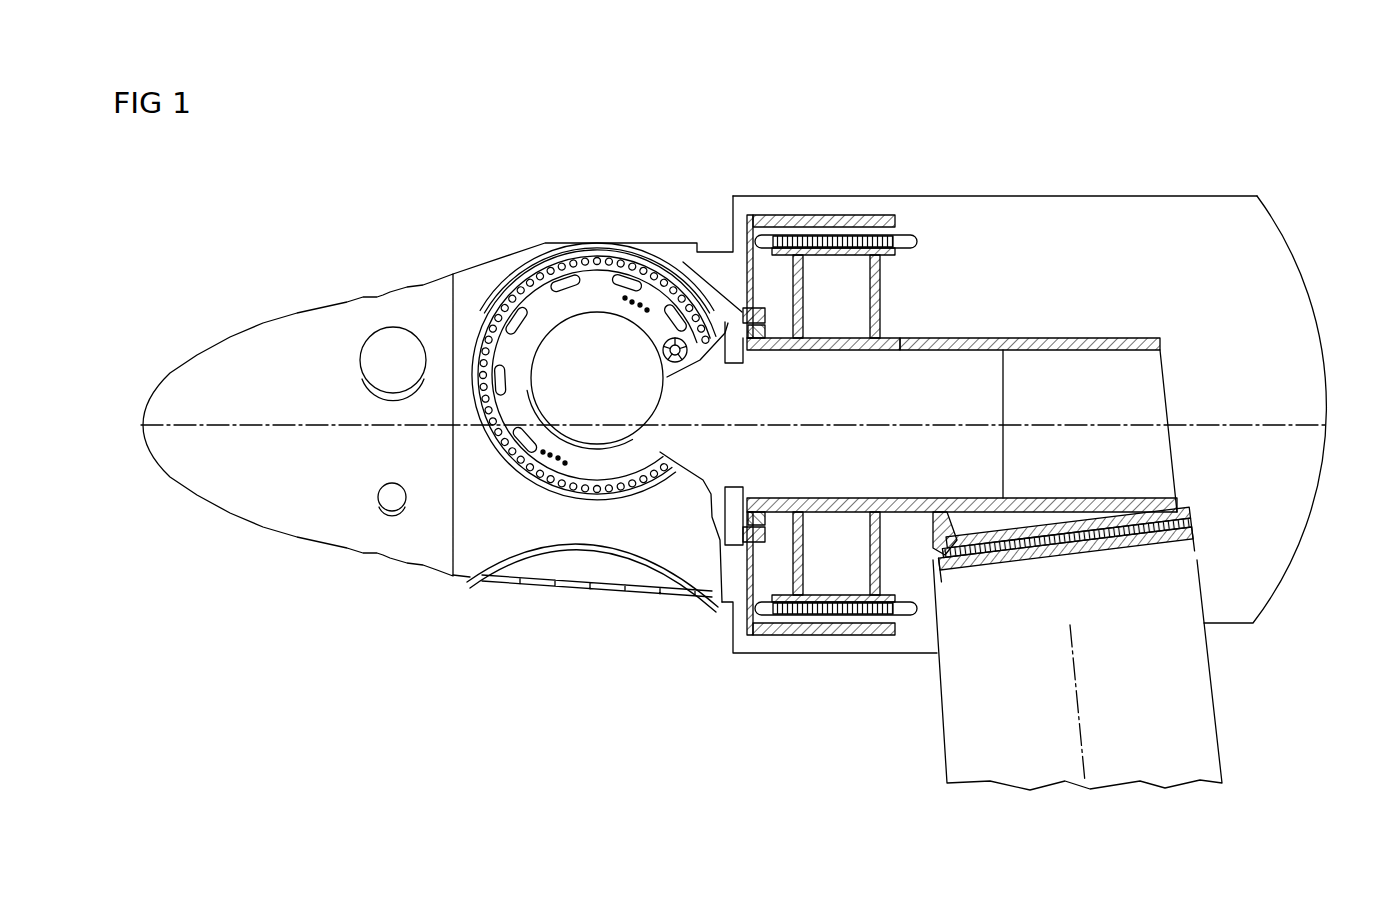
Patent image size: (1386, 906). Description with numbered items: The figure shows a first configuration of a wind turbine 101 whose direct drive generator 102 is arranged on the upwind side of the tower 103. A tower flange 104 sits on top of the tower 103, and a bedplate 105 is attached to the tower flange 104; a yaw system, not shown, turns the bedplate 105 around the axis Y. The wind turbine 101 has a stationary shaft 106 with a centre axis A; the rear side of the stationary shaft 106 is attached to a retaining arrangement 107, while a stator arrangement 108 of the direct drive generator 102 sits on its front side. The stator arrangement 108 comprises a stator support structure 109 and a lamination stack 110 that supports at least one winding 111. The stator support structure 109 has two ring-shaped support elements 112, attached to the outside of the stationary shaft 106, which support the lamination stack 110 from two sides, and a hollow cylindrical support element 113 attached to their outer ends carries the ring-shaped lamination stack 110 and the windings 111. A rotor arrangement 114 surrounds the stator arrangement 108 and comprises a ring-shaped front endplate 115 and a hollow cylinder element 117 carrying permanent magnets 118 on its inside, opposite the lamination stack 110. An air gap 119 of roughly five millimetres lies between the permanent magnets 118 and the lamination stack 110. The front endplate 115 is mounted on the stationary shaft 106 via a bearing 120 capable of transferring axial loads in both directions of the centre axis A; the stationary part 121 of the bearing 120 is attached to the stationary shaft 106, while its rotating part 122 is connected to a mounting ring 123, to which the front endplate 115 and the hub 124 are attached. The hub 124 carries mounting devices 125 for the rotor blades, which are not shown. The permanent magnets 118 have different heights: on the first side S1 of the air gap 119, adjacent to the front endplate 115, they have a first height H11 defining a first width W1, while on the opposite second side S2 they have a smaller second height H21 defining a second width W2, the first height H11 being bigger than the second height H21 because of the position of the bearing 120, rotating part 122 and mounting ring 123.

The wind turbine 101 is at (1156, 168).
The direct drive generator 102 is at (798, 675).
The tower 103 is at (1222, 700).
The tower flange 104 is at (1132, 560).
The bedplate 105 is at (1083, 560).
The stationary shaft 106 is at (1105, 338).
The retaining arrangement 107 is at (1052, 528).
The stator arrangement 108 is at (892, 276).
The stator support structure 109 is at (882, 297).
The lamination stack 110 is at (843, 637).
The winding 111 is at (900, 617).
The support elements 112 is at (867, 523).
The hollow cylindrical support element 113 is at (828, 597).
The rotor arrangement 114 is at (882, 199).
The front endplate 115 is at (747, 267).
The cylinder element 117 is at (780, 218).
The permanent magnets 118 is at (912, 222).
The air gap 119 is at (750, 630).
The bearing 120 is at (770, 350).
The stationary part 121 is at (753, 340).
The rotating part 122 is at (773, 333).
The mounting ring 123 is at (790, 290).
The hub 124 is at (485, 577).
The mounting devices 125 is at (537, 298).
The centre axis A is at (1248, 422).
The axis Y is at (1083, 693).
The first side S1 is at (745, 222).
The first width W1 is at (745, 222).
The first height H11 is at (745, 222).
The second side S2 is at (960, 240).
The second width W2 is at (960, 240).
The second height H21 is at (960, 240).